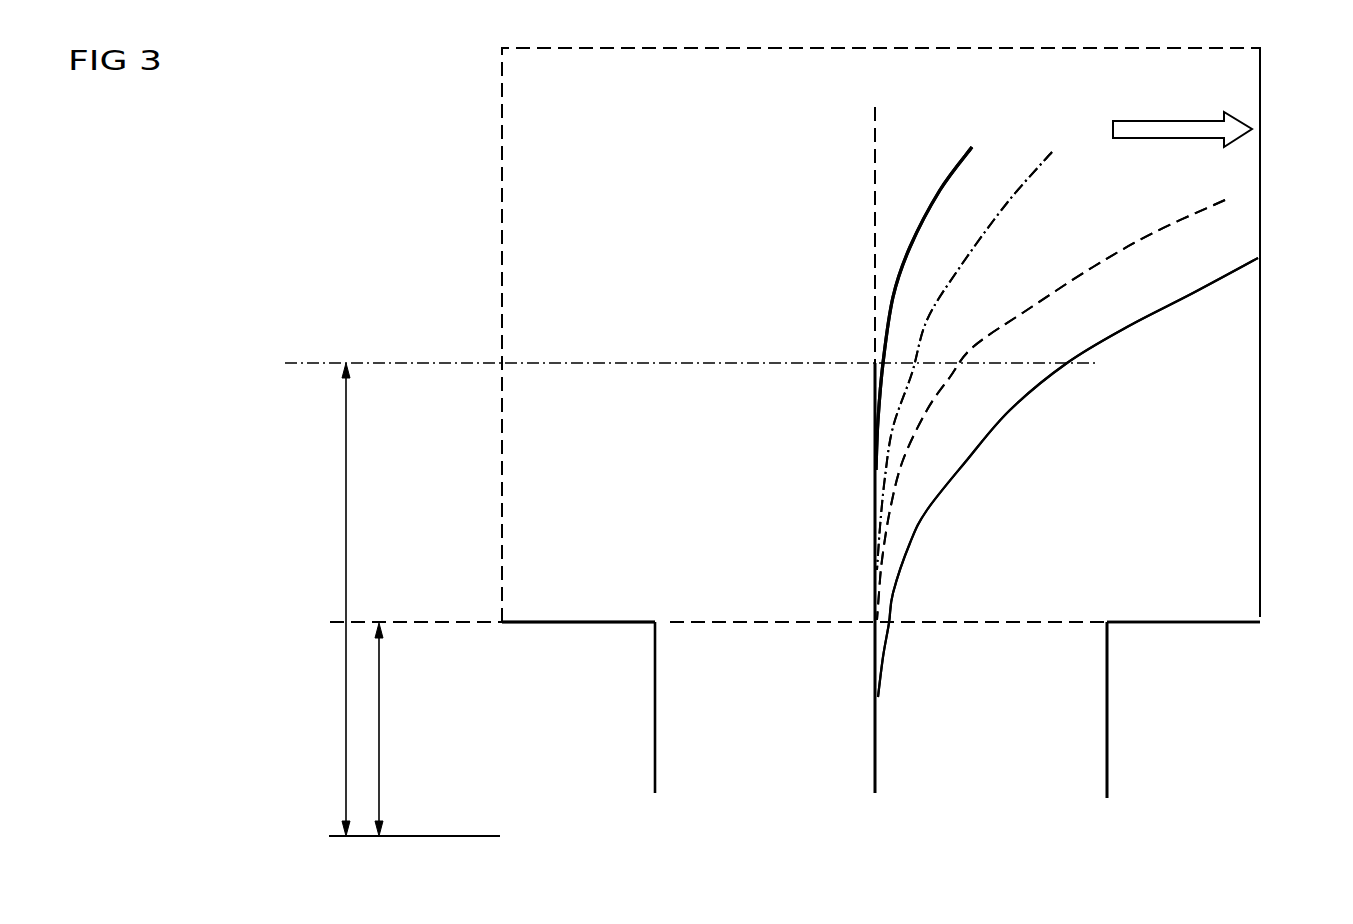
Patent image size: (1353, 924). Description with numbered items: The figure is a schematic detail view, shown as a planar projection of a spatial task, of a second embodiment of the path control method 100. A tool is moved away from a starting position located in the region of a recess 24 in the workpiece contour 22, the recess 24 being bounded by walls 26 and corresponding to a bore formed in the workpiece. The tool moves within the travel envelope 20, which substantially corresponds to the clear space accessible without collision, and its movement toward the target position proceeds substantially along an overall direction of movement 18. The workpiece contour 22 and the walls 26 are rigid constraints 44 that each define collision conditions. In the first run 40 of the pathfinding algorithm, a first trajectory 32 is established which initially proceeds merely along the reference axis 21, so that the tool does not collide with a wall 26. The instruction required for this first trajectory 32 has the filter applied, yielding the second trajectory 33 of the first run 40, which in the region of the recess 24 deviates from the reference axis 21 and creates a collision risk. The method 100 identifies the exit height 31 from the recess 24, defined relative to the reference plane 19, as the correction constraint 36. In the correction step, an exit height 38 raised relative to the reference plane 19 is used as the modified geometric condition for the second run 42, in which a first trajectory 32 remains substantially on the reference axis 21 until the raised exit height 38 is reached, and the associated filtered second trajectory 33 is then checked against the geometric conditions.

The method 100 is at (430, 206).
The overall direction of movement 18 is at (1186, 119).
The reference plane 19 is at (340, 837).
The travel envelope 20 is at (1240, 317).
The reference axis 21 is at (875, 143).
The workpiece contour 22 is at (522, 623).
The recess 24 is at (984, 650).
The walls 26 is at (1105, 774).
The exit height 31 is at (379, 702).
The first trajectory 32 is at (939, 190).
The second trajectory 33 is at (1007, 199).
The correction constraint 36 is at (578, 668).
The raised exit height 38 is at (346, 578).
The first run 40 is at (1067, 436).
The second run 42 is at (970, 332).
The rigid constraints 44 is at (881, 703).